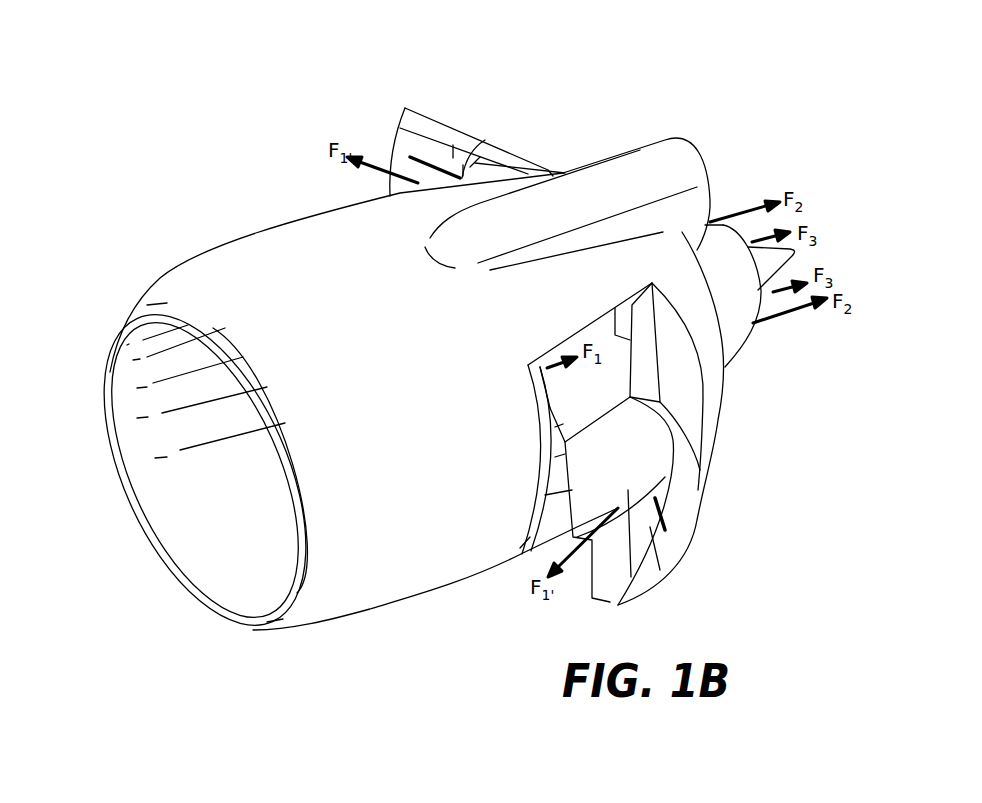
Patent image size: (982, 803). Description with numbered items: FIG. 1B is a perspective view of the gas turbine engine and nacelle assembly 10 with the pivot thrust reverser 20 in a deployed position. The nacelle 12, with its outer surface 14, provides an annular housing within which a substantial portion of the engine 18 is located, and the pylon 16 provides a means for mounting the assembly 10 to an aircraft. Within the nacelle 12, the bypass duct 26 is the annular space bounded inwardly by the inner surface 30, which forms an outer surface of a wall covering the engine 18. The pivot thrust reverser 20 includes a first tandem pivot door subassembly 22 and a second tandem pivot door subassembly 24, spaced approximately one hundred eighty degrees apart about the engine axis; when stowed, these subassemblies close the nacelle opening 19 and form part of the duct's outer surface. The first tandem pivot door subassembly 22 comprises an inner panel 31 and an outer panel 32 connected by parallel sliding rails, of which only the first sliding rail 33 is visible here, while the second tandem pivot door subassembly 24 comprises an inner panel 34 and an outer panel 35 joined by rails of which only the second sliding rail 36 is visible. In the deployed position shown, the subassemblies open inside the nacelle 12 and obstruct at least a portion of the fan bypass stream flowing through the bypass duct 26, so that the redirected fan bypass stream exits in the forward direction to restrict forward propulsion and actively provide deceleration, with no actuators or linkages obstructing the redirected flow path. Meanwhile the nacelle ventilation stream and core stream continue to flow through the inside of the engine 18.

The gas turbine engine and nacelle assembly 10 is at (123, 201).
The nacelle 12 is at (305, 203).
The outer surface of nacelle 14 is at (383, 547).
The pylon 16 is at (642, 158).
The engine 18 is at (827, 248).
The nacelle opening 19 is at (577, 340).
The pivot thrust reverser 20 is at (718, 461).
The first tandem pivot door subassembly 22 is at (719, 523).
The second tandem pivot door subassembly 24 is at (449, 71).
The bypass duct 26 is at (572, 391).
The inner surface of bypass duct 30 is at (612, 362).
The inner panel of first tandem pivot door subassembly 31 is at (631, 577).
The outer panel of first tandem pivot door subassembly 32 is at (660, 570).
The first sliding rail 33 is at (665, 508).
The inner panel of second tandem pivot door subassembly 34 is at (476, 165).
The outer panel of second tandem pivot door subassembly 35 is at (453, 158).
The second sliding rail 36 is at (426, 136).